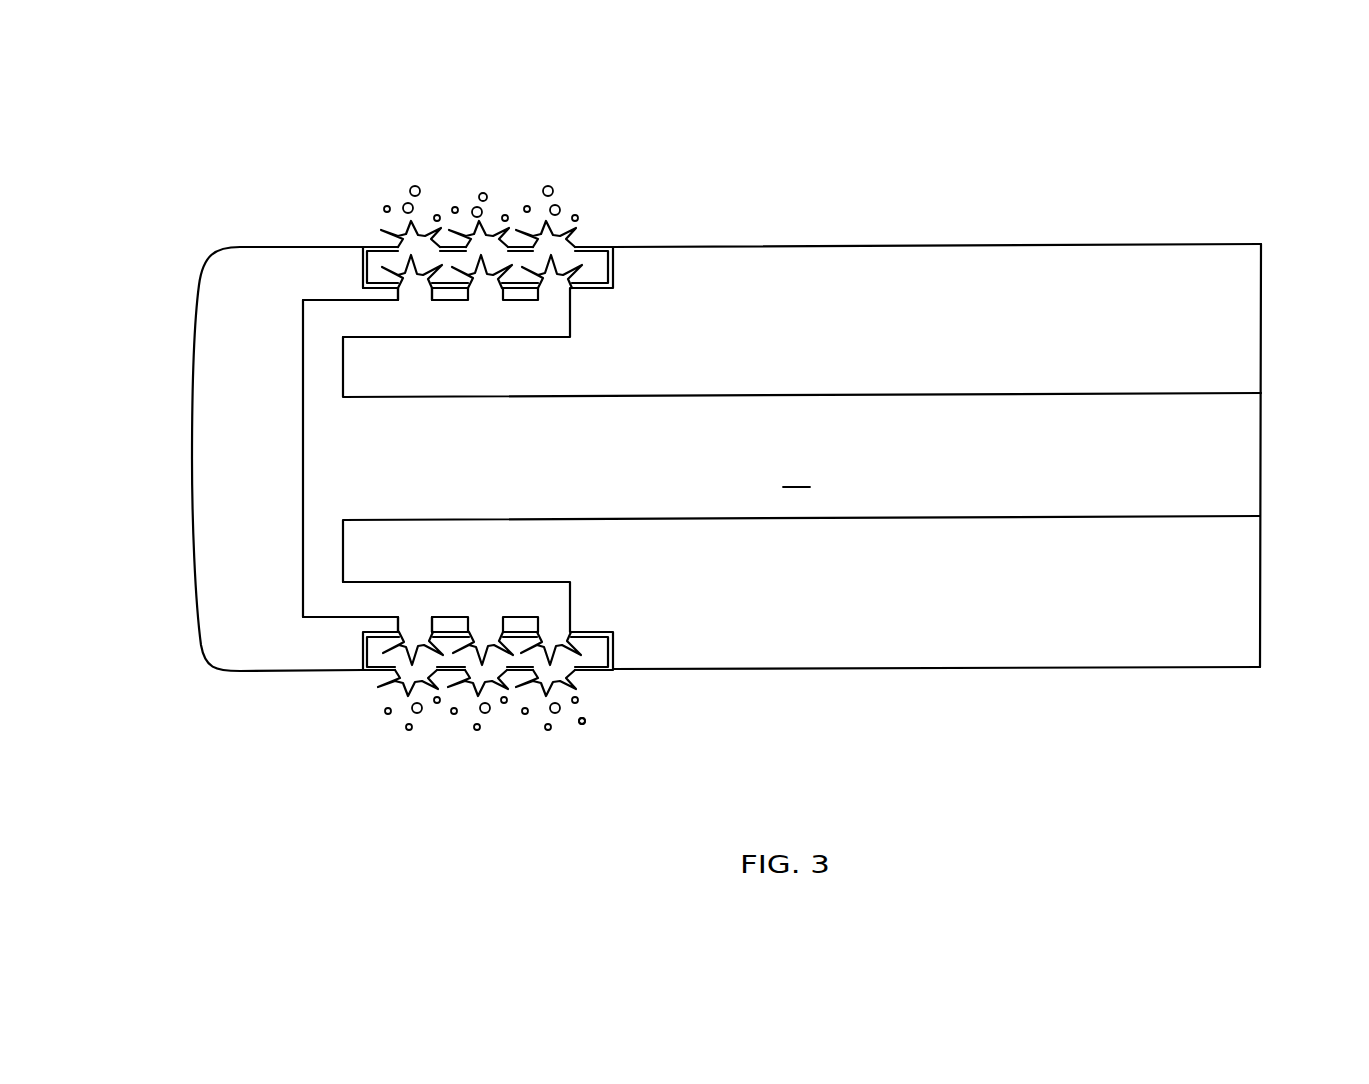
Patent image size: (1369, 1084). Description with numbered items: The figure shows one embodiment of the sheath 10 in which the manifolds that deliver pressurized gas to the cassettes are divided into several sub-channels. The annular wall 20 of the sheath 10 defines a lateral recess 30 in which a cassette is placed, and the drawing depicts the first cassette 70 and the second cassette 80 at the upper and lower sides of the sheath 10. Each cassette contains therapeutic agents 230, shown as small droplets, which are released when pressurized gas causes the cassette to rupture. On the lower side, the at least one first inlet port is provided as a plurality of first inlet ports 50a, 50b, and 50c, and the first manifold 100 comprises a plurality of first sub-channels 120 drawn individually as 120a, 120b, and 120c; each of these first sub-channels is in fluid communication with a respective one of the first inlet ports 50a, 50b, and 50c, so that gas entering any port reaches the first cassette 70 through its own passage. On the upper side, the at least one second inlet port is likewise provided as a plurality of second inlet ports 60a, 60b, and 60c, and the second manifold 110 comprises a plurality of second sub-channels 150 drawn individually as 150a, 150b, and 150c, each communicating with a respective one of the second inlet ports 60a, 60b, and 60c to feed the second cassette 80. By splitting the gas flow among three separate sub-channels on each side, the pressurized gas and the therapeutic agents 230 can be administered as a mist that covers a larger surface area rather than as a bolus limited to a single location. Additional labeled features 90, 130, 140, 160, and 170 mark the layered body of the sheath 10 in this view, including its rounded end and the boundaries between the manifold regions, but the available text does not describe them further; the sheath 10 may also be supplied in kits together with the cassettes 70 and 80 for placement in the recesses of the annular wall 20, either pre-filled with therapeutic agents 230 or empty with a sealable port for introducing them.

The sheath 10 is at (1115, 225).
The annular wall 20 is at (1068, 669).
The first lateral recess 30 is at (360, 648).
The first inlet port 50a is at (412, 685).
The first inlet port 50b is at (478, 683).
The first inlet port 50c is at (553, 683).
The second inlet port 60a is at (400, 280).
The second inlet port 60b is at (482, 274).
The second inlet port 60c is at (550, 282).
The first cassette 70 is at (500, 673).
The second cassette 80 is at (476, 262).
The electrolyte channel 90 is at (364, 284).
The first manifold 100 is at (270, 600).
The second manifold 110 is at (324, 284).
The bottom current collector 120 is at (565, 597).
The first sub-channel 120a is at (417, 617).
The first sub-channel 120b is at (485, 617).
The first sub-channel 120c is at (557, 617).
The lower interface 130 is at (322, 530).
The upper interface 140 is at (325, 393).
The top current collector 150 is at (567, 294).
The second sub-channel 150a is at (413, 292).
The second sub-channel 150b is at (486, 292).
The second sub-channel 150c is at (554, 292).
The end cap 160 is at (167, 453).
The top layer 170 is at (1265, 385).
The therapeutic agents 230 is at (590, 722).